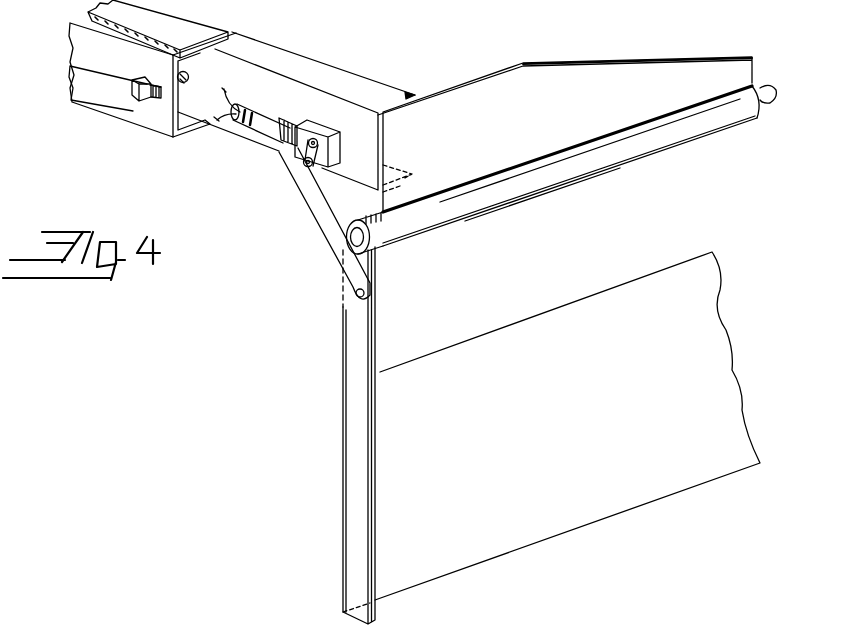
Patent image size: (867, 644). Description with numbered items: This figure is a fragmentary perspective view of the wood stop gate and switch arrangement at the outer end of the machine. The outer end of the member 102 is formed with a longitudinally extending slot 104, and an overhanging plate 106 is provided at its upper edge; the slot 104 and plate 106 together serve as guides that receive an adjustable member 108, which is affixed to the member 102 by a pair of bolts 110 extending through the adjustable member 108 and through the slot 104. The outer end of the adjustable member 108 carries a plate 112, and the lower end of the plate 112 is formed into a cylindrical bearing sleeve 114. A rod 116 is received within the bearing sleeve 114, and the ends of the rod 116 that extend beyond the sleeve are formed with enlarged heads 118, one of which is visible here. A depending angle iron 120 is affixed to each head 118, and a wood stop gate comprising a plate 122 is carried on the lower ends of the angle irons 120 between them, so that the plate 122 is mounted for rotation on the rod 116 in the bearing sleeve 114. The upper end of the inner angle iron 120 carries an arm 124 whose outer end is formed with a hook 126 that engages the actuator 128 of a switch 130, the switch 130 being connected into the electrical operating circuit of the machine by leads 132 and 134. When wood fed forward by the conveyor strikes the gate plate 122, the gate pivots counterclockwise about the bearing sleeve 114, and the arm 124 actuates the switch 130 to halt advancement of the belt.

The member 102 is at (77, 40).
The longitudinally extending slot 104 is at (103, 72).
The overhanging plate 106 is at (158, 29).
The adjustable member 108 is at (353, 82).
The bolts 110 is at (137, 97).
The plate 112 is at (478, 83).
The cylindrical bearing sleeve 114 is at (497, 205).
The rod 116 is at (765, 108).
The enlarged heads 118 is at (380, 250).
The depending angle iron 120 is at (355, 333).
The plate 122 is at (567, 426).
The arm 124 is at (320, 220).
The hook 126 is at (300, 152).
The actuator 128 is at (322, 150).
The switch 130 is at (318, 128).
The lead 132 is at (225, 125).
The lead 134 is at (232, 102).